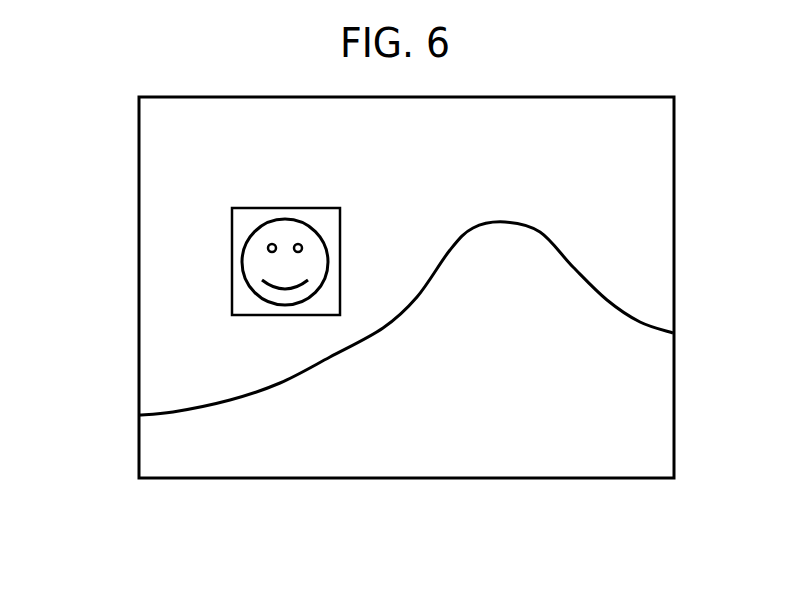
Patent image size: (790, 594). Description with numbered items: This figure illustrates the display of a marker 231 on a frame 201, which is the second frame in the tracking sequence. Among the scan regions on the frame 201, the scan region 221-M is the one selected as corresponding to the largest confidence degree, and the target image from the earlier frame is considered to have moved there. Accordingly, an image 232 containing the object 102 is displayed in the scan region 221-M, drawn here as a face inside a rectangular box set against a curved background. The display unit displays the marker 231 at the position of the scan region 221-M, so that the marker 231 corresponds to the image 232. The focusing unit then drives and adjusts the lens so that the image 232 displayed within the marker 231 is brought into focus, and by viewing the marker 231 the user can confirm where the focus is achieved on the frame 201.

The frame 201 is at (407, 478).
The scan region 221-M is at (192, 231).
The image 232 is at (263, 208).
The marker 231 is at (232, 242).
The object 102 is at (243, 286).